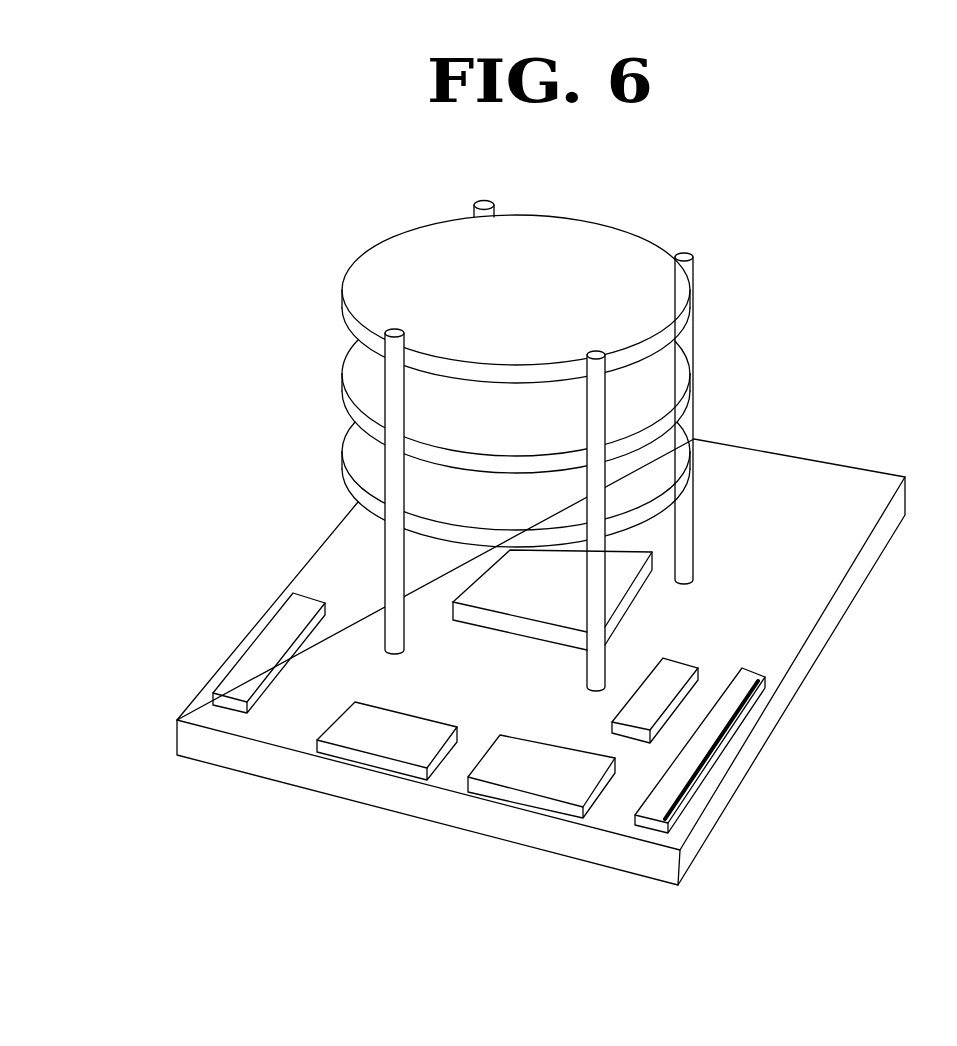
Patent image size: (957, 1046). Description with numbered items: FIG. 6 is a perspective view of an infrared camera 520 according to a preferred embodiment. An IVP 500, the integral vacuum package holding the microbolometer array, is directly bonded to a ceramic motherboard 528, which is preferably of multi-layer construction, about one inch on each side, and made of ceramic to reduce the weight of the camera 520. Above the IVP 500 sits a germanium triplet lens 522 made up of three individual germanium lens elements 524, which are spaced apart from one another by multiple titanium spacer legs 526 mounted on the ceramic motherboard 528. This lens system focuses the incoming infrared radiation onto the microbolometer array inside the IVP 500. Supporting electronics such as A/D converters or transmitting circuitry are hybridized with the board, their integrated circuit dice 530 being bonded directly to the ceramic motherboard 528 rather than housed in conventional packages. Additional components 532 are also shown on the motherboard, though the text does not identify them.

The IVP 500 is at (625, 565).
The infrared camera 520 is at (774, 184).
The germanium triplet lens 522 is at (362, 255).
The germanium lens element 524 is at (343, 300).
The titanium spacer leg 526 is at (683, 339).
The ceramic motherboard 528 is at (820, 583).
The integrated circuit die 530 is at (337, 735).
The rail 532 is at (260, 660).